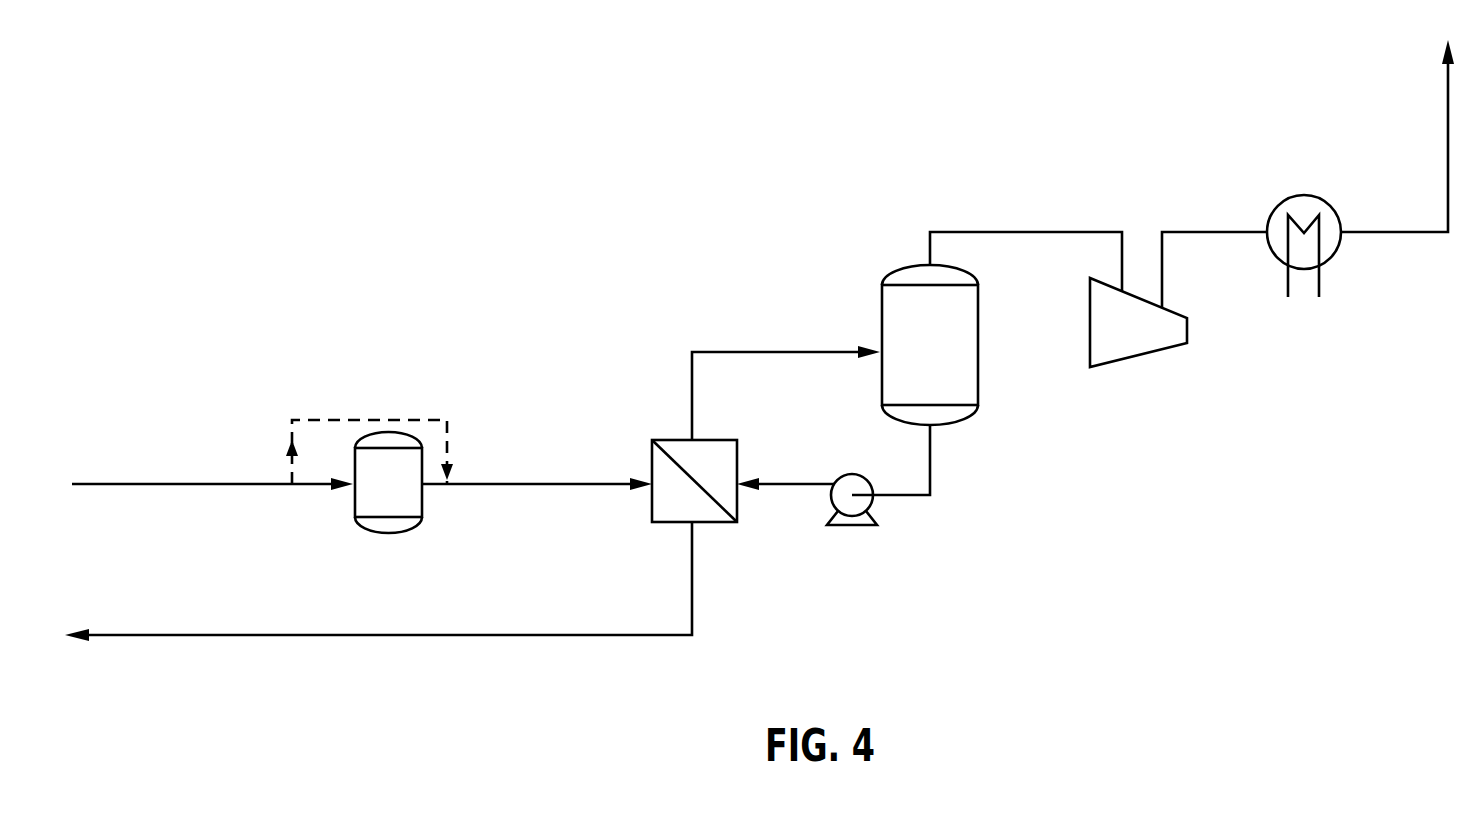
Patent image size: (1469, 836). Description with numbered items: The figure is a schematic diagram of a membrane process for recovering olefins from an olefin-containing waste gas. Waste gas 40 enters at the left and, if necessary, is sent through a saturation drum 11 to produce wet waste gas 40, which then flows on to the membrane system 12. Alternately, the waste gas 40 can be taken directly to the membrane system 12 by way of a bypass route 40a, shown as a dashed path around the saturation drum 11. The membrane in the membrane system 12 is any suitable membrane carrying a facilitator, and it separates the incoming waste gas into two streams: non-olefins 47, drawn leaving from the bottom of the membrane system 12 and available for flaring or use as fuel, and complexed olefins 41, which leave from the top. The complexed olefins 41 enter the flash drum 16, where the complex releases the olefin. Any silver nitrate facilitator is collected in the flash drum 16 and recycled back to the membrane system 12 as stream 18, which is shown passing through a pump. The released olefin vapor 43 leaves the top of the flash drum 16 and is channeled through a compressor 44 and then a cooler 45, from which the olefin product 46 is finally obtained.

The waste gas 40 is at (205, 483).
The route 40a is at (394, 420).
The saturation drum 11 is at (422, 518).
The membrane system 12 is at (652, 443).
The complexed olefins 41 is at (777, 350).
The flash drum 16 is at (978, 383).
The stream 18 is at (928, 458).
The olefin vapor 43 is at (1017, 230).
The compressor 44 is at (1147, 353).
The cooler 45 is at (1337, 213).
The olefin product 46 is at (1448, 152).
The non-olefins 47 is at (530, 633).